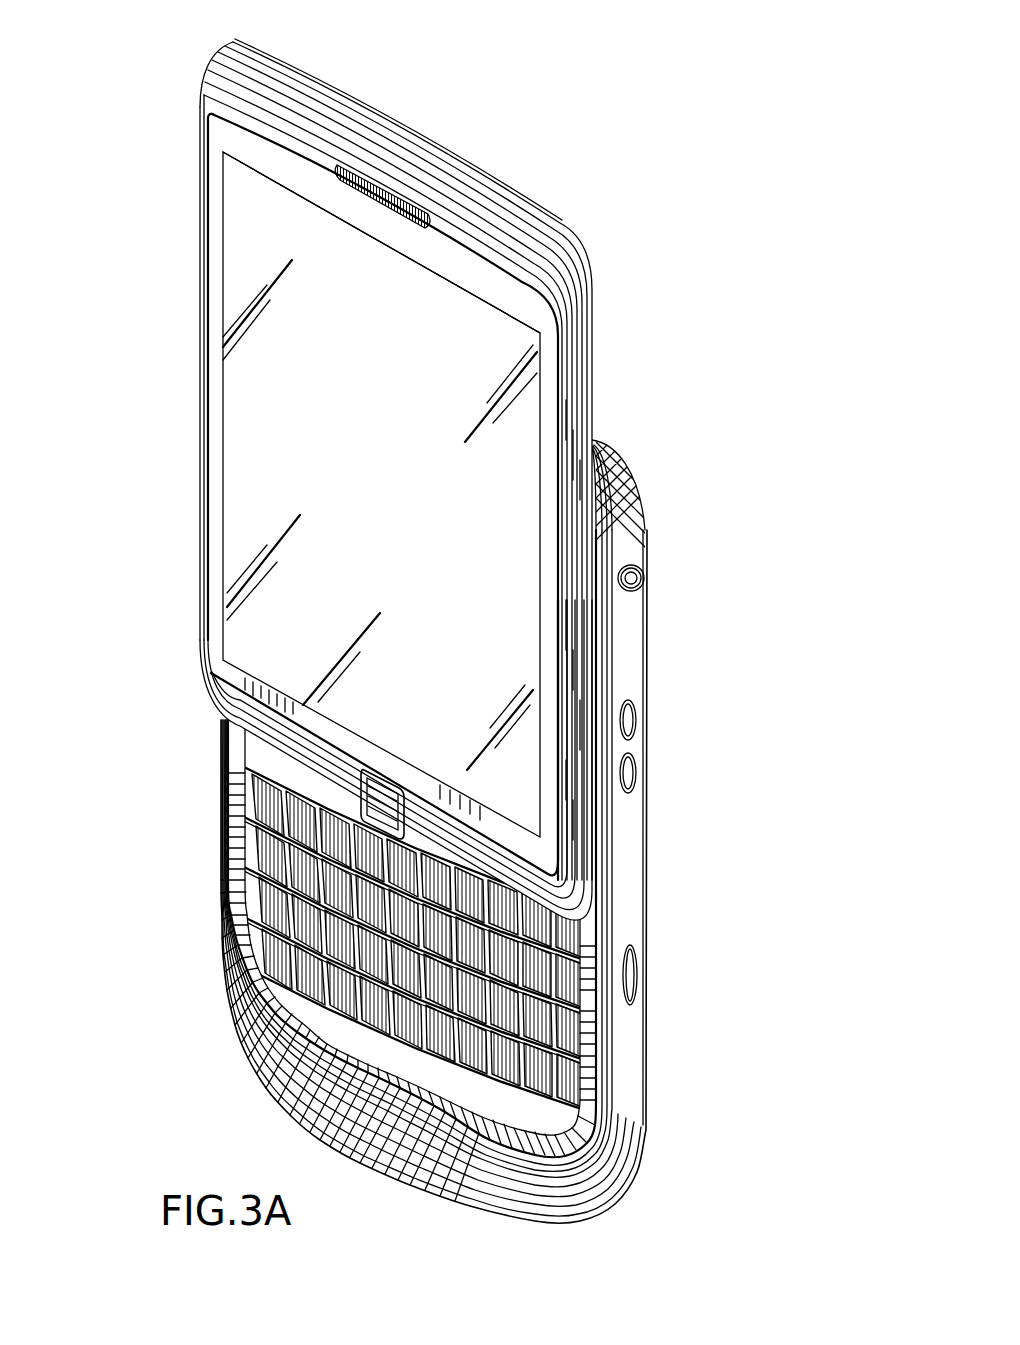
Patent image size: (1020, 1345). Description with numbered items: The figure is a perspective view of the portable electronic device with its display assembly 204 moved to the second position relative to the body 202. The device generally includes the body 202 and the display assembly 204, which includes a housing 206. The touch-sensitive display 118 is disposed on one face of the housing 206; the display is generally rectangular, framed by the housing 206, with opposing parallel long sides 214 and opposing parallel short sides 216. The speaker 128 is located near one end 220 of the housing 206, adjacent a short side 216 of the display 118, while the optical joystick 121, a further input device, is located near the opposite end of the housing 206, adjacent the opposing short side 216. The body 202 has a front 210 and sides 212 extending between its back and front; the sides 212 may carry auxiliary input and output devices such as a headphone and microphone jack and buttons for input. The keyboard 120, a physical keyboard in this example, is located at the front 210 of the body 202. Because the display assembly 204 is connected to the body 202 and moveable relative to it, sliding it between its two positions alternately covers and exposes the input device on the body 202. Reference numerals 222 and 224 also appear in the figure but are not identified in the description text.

The touch-sensitive display 118 is at (260, 507).
The keyboard 120 is at (263, 897).
The optical joystick 121 is at (405, 818).
The speaker 128 is at (362, 180).
The body 202 is at (583, 247).
The display assembly 204 is at (200, 315).
The housing 206 is at (215, 101).
The front 210 is at (562, 930).
The sides 212 is at (630, 628).
The long sides 214 is at (540, 383).
The short sides 216 is at (455, 287).
The end of the housing 220 is at (413, 130).
The bottom edge of first housing portion 222 is at (288, 741).
The corner of first housing portion 224 is at (573, 920).